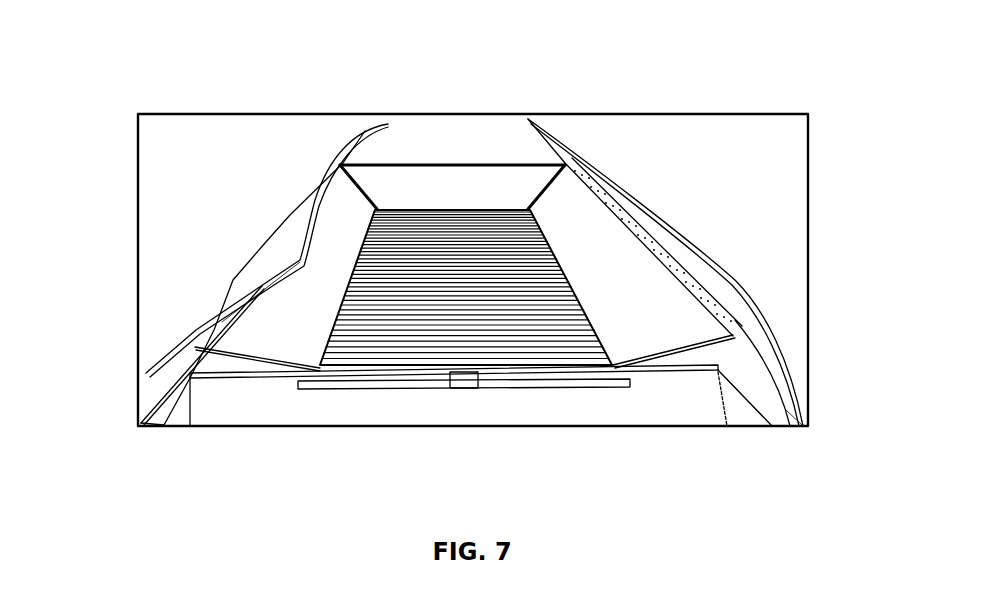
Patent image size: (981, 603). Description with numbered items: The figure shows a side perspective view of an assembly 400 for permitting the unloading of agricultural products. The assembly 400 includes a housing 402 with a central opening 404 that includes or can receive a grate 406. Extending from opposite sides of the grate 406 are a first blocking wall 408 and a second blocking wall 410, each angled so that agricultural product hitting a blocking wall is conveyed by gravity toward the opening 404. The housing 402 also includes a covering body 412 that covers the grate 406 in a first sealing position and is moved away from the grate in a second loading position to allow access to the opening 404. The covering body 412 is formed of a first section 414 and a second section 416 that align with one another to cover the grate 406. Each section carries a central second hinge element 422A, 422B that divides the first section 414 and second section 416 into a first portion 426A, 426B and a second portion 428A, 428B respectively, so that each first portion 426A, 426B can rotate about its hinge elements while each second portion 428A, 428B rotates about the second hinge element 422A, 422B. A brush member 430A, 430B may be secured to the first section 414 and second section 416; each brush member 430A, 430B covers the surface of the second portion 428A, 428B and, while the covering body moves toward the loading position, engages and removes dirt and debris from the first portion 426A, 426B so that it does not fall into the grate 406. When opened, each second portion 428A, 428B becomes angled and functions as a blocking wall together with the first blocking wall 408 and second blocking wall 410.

The assembly 400 is at (684, 60).
The housing 402 is at (664, 378).
The central opening 404 is at (600, 368).
The grate 406 is at (537, 341).
The first blocking wall 408 is at (370, 380).
The second blocking wall 410 is at (490, 183).
The covering body 412 is at (456, 102).
The first section 414 is at (295, 105).
The second section 416 is at (694, 106).
The second hinge element 422A is at (220, 323).
The second hinge element 422B is at (658, 257).
The first portion 426A is at (340, 240).
The first portion 426B is at (642, 304).
The second portion 428A is at (146, 413).
The second portion 428B is at (783, 410).
The brush member 430A is at (319, 176).
The brush member 430B is at (573, 146).